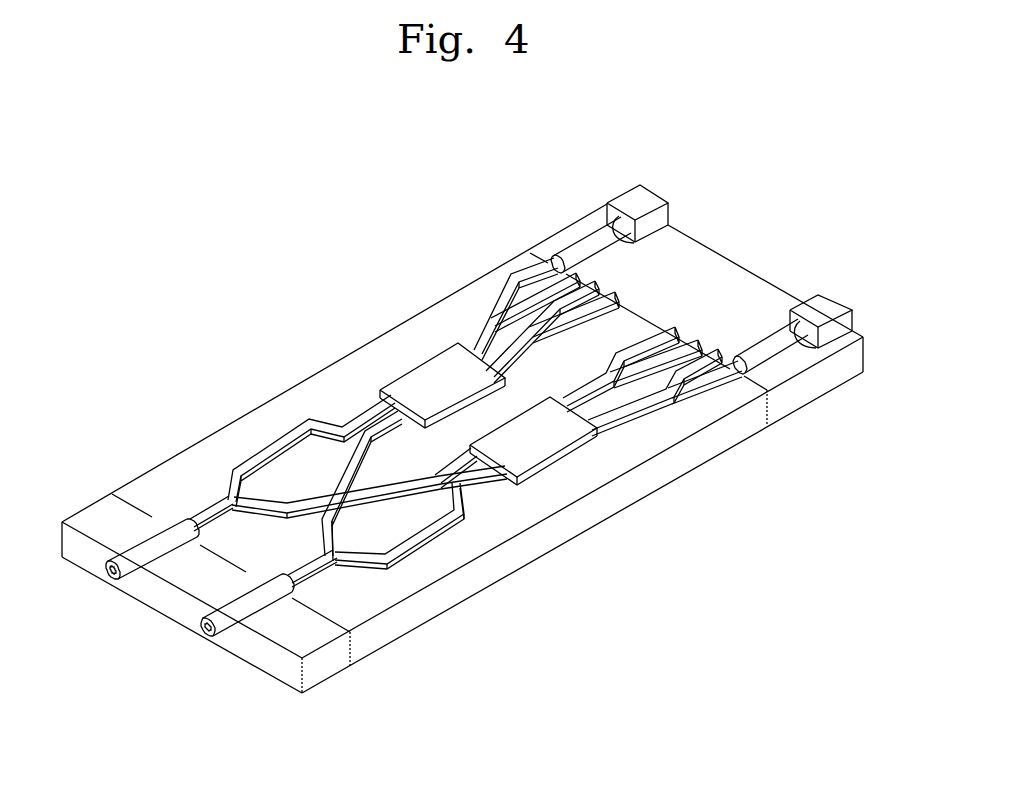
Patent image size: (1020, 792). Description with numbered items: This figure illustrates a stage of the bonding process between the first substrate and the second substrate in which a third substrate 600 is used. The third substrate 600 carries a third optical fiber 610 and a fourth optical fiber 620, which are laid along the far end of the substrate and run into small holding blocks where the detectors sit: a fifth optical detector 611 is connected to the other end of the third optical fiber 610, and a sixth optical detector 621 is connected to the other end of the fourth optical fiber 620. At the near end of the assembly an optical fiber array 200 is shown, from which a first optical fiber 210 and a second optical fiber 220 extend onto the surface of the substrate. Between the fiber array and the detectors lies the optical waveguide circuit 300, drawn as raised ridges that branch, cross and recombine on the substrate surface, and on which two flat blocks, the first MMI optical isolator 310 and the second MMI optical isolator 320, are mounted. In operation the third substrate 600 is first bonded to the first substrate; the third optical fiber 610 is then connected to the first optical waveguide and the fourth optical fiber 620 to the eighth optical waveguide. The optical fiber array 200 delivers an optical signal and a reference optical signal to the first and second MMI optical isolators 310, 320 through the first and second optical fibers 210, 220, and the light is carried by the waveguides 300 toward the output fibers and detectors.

The optical fiber array 200 is at (98, 519).
The first optical fiber 210 is at (153, 520).
The second optical fiber 220 is at (250, 605).
The optical waveguide 300 is at (313, 393).
The first MMI optical isolator 310 is at (423, 378).
The second MMI optical isolator 320 is at (553, 452).
The third substrate 600 is at (726, 268).
The third optical fiber 610 is at (567, 253).
The fifth optical detector 611 is at (635, 197).
The fourth optical fiber 620 is at (762, 352).
The sixth optical detector 621 is at (828, 300).